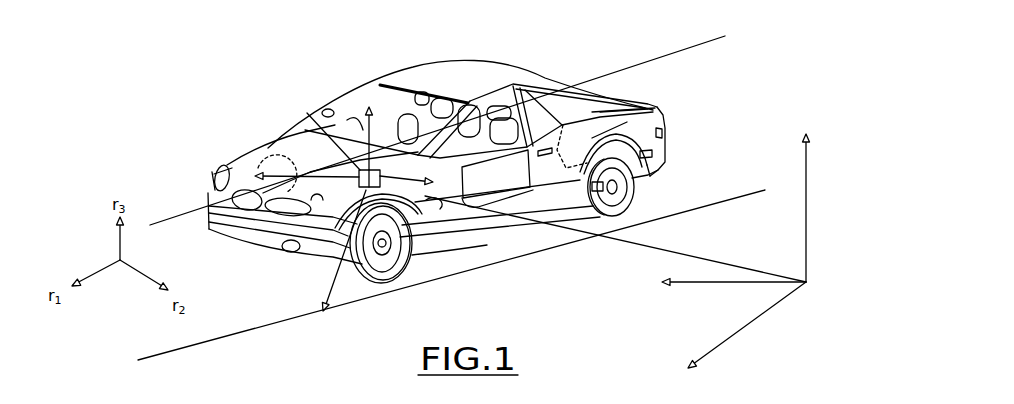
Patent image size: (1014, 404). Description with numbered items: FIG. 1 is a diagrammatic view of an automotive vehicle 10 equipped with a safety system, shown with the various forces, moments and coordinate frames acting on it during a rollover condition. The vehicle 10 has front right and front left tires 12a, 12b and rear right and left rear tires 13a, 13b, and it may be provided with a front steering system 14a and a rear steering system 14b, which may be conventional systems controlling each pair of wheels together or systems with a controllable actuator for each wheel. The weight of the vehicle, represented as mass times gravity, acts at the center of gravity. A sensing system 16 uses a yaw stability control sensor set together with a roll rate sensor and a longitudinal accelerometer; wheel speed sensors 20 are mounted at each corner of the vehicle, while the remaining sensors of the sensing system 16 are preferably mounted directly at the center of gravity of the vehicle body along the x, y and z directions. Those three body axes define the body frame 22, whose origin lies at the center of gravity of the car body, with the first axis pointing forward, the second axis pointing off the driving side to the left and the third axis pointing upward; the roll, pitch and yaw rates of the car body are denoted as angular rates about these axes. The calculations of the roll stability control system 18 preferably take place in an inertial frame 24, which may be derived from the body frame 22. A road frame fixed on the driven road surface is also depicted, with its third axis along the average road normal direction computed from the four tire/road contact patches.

The automotive vehicle 10 is at (479, 63).
The front right tire 12a is at (228, 158).
The front left tire 12b is at (398, 284).
The rear right tire 13a is at (650, 93).
The left rear tire 13b is at (645, 192).
The front steering system 14a is at (356, 180).
The rear steering system 14b is at (665, 120).
The sensing system 16 is at (423, 100).
The roll stability control system 18 is at (523, 145).
The wheel speed sensors 20 is at (545, 224).
The body frame 22 is at (358, 172).
The inertial frame 24 is at (808, 284).